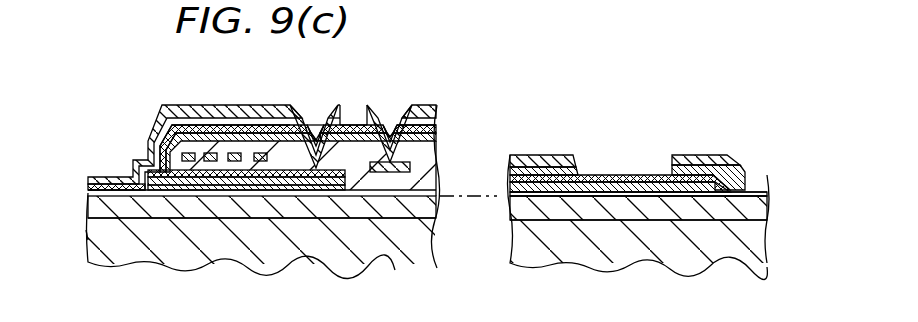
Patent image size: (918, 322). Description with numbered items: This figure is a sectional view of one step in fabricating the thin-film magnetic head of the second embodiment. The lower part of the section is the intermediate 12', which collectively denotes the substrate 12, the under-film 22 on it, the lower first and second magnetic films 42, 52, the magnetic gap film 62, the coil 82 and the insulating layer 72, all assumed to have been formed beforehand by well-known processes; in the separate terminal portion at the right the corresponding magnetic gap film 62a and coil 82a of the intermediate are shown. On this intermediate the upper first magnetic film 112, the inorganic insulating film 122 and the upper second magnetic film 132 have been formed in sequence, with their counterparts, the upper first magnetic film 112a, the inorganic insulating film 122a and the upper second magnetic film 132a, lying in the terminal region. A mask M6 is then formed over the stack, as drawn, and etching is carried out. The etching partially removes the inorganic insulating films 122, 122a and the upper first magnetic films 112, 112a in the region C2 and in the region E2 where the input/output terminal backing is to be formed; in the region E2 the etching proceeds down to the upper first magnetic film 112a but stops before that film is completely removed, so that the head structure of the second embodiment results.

The substrate 12 is at (428, 204).
The intermediate 12' is at (65, 258).
The under-film 22 is at (417, 205).
The lower first magnetic film 42 is at (207, 188).
The lower second magnetic film 52 is at (182, 195).
The magnetic gap film 62 is at (237, 180).
The coil 82 is at (275, 172).
The insulating layer 72 is at (375, 150).
The upper first magnetic film 112 is at (224, 132).
The inorganic insulating film 122 is at (267, 140).
The upper second magnetic film 132 is at (192, 120).
The mask M6 is at (298, 110).
The region C2 is at (350, 123).
The region E2 is at (672, 170).
The upper first magnetic film 112a is at (585, 180).
The inorganic insulating film 122a is at (622, 188).
The upper second magnetic film 132a is at (545, 170).
The magnetic gap film 62a is at (622, 194).
The coil 82a is at (574, 198).